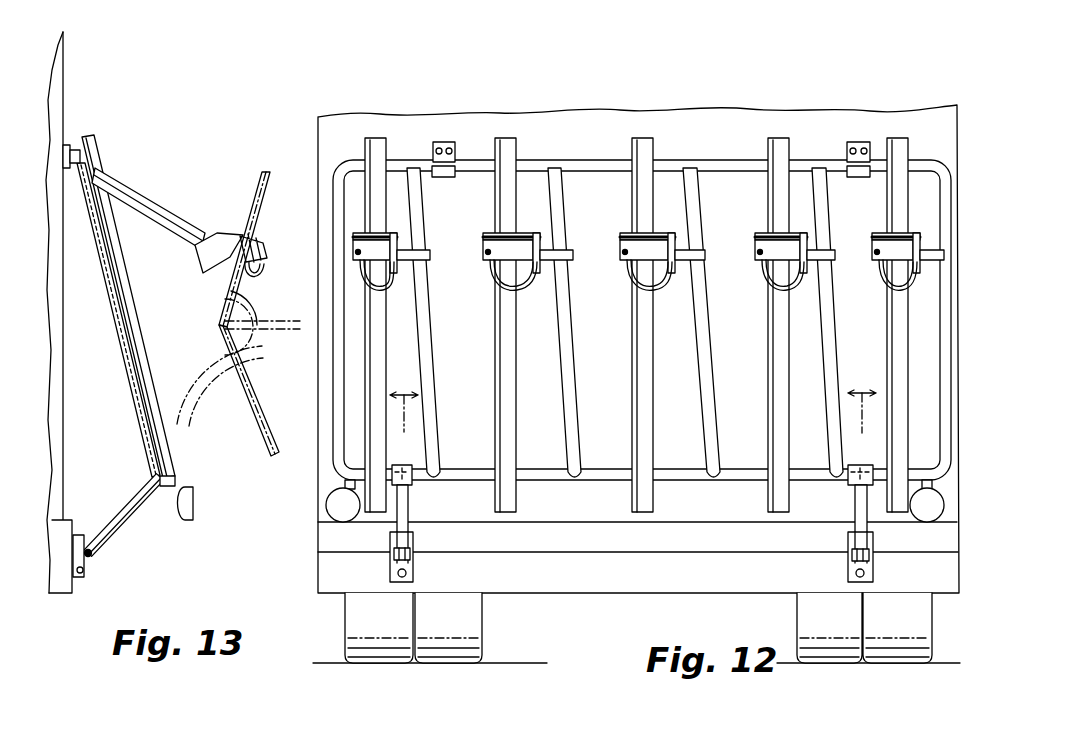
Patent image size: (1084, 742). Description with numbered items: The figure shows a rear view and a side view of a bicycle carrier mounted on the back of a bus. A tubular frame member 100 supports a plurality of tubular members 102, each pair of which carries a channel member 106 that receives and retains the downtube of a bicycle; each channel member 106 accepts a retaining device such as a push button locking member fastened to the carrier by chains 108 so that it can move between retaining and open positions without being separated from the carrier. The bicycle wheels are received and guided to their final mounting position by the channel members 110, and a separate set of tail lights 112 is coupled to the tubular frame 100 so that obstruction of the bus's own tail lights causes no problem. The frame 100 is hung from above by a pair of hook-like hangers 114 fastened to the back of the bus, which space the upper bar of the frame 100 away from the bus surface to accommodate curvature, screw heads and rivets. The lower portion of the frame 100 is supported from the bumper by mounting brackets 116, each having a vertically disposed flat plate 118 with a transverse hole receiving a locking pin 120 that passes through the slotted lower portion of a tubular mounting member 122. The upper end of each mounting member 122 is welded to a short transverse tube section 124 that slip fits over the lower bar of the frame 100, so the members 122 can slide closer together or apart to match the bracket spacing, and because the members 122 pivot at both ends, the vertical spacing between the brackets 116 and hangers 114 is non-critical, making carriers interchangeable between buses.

In FIG. 12, the tubular frame member 100 is at (582, 162).
In FIG. 12, the tubular member 102 is at (418, 214).
In FIG. 13, the tubular member 102 is at (165, 213).
In FIG. 12, the channel member 106 is at (362, 233).
In FIG. 13, the channel member 106 is at (240, 233).
In FIG. 12, the chain 108 is at (397, 287).
In FIG. 13, the chain 108 is at (258, 277).
In FIG. 12, the channel member 110 is at (366, 142).
In FIG. 13, the channel member 110 is at (126, 306).
In FIG. 12, the tail light 112 is at (327, 502).
In FIG. 13, the tail light 112 is at (193, 507).
In FIG. 12, the hook-like hanger 114 is at (445, 142).
In FIG. 13, the hook-like hanger 114 is at (72, 147).
In FIG. 12, the mounting bracket 116 is at (413, 533).
In FIG. 13, the mounting bracket 116 is at (80, 533).
In FIG. 12, the flat plate 118 is at (396, 578).
In FIG. 13, the flat plate 118 is at (92, 572).
In FIG. 12, the locking pin 120 is at (393, 553).
In FIG. 13, the locking pin 120 is at (95, 560).
In FIG. 12, the tubular mounting member 122 is at (398, 513).
In FIG. 13, the tubular mounting member 122 is at (130, 513).
In FIG. 12, the short transverse tube section 124 is at (410, 467).